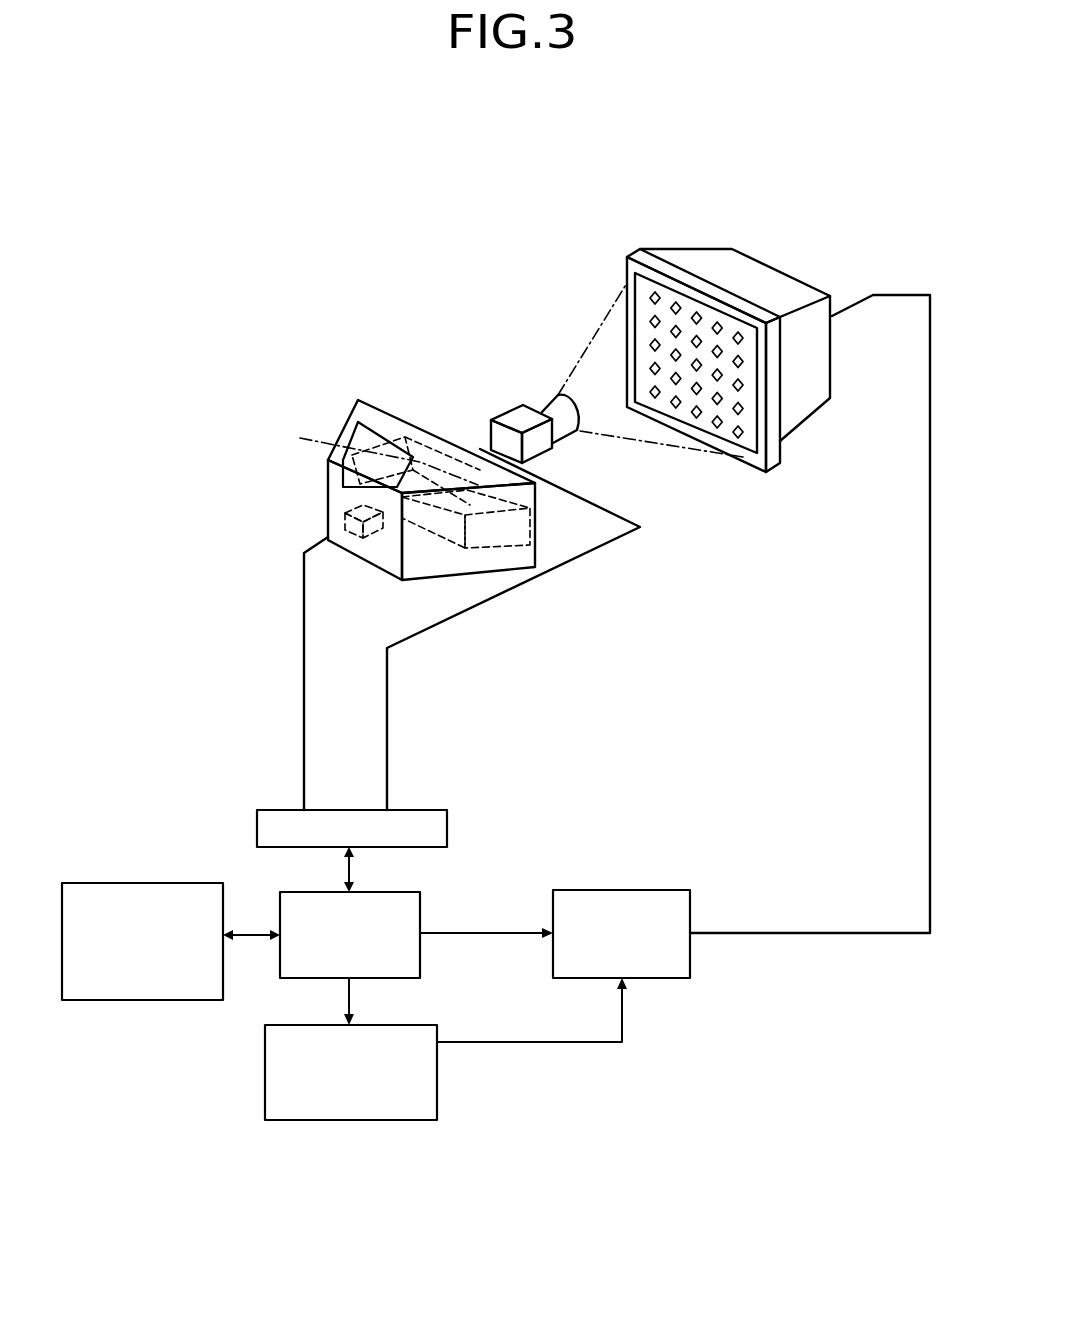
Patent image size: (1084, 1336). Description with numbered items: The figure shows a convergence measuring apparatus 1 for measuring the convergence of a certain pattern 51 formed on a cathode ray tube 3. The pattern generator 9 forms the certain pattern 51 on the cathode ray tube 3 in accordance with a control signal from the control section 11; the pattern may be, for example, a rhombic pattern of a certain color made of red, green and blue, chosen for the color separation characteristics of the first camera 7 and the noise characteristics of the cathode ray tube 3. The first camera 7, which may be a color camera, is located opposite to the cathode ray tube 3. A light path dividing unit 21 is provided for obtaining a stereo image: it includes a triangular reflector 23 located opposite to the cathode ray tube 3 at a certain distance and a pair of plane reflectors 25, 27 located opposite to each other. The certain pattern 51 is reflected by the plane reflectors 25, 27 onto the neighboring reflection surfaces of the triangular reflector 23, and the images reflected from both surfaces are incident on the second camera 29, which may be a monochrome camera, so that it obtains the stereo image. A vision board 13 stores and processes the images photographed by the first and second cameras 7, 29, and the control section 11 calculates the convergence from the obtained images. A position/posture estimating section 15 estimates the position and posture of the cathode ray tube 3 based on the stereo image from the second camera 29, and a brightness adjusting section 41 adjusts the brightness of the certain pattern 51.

The apparatus 1 is at (364, 274).
The cathode ray tube 3 is at (755, 277).
The certain pattern 51 is at (677, 308).
The first camera 7 is at (513, 414).
The light path dividing unit 21 is at (358, 406).
The triangular reflector 23 is at (418, 462).
The plane reflector 25 is at (300, 438).
The plane reflector 27 is at (498, 537).
The second camera 29 is at (345, 515).
The vision board 13 is at (280, 811).
The position/posture estimating section 15 is at (142, 892).
The control section 11 is at (420, 889).
The pattern generator 9 is at (608, 896).
The brightness adjusting section 41 is at (350, 1122).